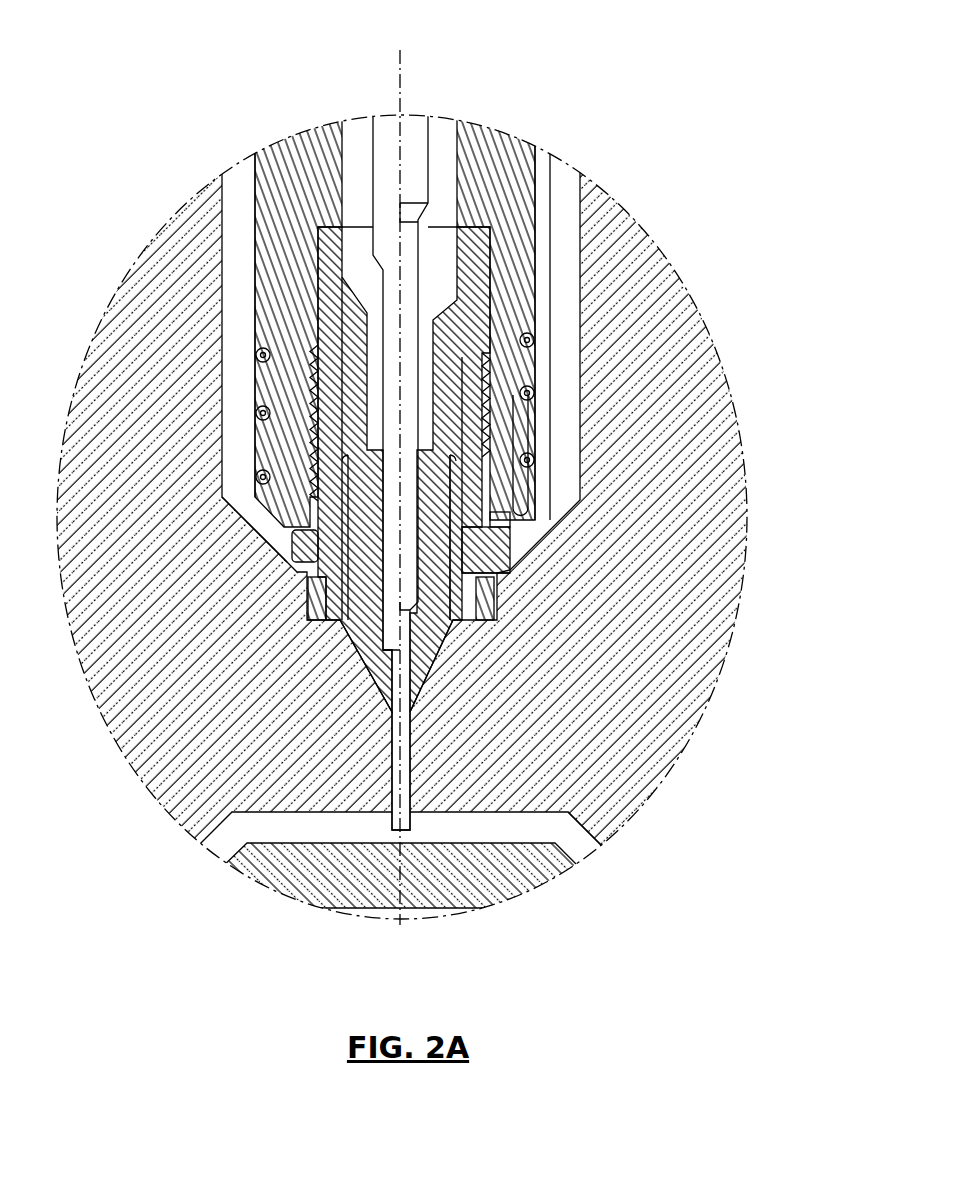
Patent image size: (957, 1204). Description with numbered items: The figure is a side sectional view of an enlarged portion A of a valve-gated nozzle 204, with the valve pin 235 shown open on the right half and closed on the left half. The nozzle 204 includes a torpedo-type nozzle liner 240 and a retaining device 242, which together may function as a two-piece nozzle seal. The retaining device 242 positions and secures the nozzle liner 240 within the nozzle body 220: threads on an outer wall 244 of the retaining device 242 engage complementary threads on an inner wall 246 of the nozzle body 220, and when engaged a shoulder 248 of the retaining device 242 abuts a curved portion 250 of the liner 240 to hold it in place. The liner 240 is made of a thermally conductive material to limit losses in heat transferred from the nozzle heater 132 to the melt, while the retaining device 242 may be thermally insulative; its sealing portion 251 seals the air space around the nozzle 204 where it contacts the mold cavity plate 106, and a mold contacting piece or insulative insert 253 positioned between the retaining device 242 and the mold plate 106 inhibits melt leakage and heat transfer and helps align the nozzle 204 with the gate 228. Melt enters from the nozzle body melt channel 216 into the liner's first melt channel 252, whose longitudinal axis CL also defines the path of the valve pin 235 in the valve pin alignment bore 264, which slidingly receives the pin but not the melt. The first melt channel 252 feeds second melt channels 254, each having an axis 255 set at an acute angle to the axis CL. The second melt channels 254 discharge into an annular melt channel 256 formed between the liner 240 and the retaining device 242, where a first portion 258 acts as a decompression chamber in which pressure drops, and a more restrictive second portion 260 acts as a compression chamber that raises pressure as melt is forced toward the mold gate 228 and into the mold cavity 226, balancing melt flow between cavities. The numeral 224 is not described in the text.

The mold cavity plate 106 is at (710, 660).
The nozzle heater 132 is at (252, 357).
The valve-gated nozzle 204 is at (542, 175).
The nozzle body melt channel 216 is at (583, 200).
The nozzle body 220 is at (500, 150).
The mold gate 224 is at (357, 780).
The mold cavity 226 is at (600, 850).
The mold gate 228 is at (406, 815).
The valve pin 235 is at (415, 128).
The nozzle liner 240 is at (311, 213).
The retaining device 242 is at (280, 546).
The outer wall 244 is at (256, 477).
The inner wall 246 is at (256, 413).
The shoulder 248 is at (256, 352).
The curved portion 250 is at (320, 352).
The sealing portion 251 is at (316, 622).
The first melt channel 252 is at (434, 342).
The insulative insert 253 is at (492, 612).
The second melt channel 254 is at (242, 515).
The axis 255 is at (520, 402).
The annular melt channel 256 is at (488, 565).
The first portion 258 is at (508, 520).
The second portion 260 is at (458, 472).
The valve pin alignment bore 264 is at (472, 552).
The portion A is at (652, 206).
The longitudinal axis CL is at (400, 110).